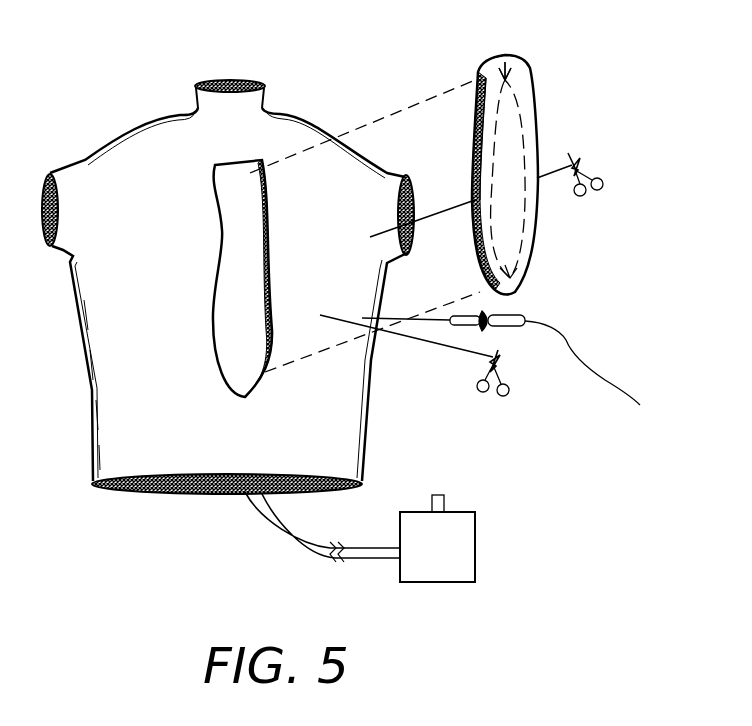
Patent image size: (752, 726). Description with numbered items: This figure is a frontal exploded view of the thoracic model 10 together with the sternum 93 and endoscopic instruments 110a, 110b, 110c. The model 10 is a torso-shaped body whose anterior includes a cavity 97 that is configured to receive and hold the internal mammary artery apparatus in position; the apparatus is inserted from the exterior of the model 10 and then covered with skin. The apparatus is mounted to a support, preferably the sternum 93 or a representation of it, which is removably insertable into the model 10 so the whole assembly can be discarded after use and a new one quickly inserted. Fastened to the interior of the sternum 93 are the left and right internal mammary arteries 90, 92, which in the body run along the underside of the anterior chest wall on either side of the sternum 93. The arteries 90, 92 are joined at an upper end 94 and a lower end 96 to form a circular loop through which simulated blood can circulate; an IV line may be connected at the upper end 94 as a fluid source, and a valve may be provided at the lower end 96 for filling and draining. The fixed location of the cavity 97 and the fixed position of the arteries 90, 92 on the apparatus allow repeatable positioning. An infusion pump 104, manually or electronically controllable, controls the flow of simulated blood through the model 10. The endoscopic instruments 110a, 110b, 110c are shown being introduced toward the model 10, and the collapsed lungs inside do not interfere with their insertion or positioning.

The model 10 is at (375, 398).
The cavity 97 is at (218, 200).
The left internal mammary artery 90 is at (537, 122).
The right internal mammary artery 92 is at (488, 134).
The sternum 93 is at (548, 95).
The upper end 94 is at (508, 70).
The lower end 96 is at (510, 272).
The infusion pump 104 is at (360, 537).
The endoscopic instrument 110a is at (580, 167).
The endoscopic instrument 110b is at (572, 345).
The endoscopic instrument 110c is at (500, 395).